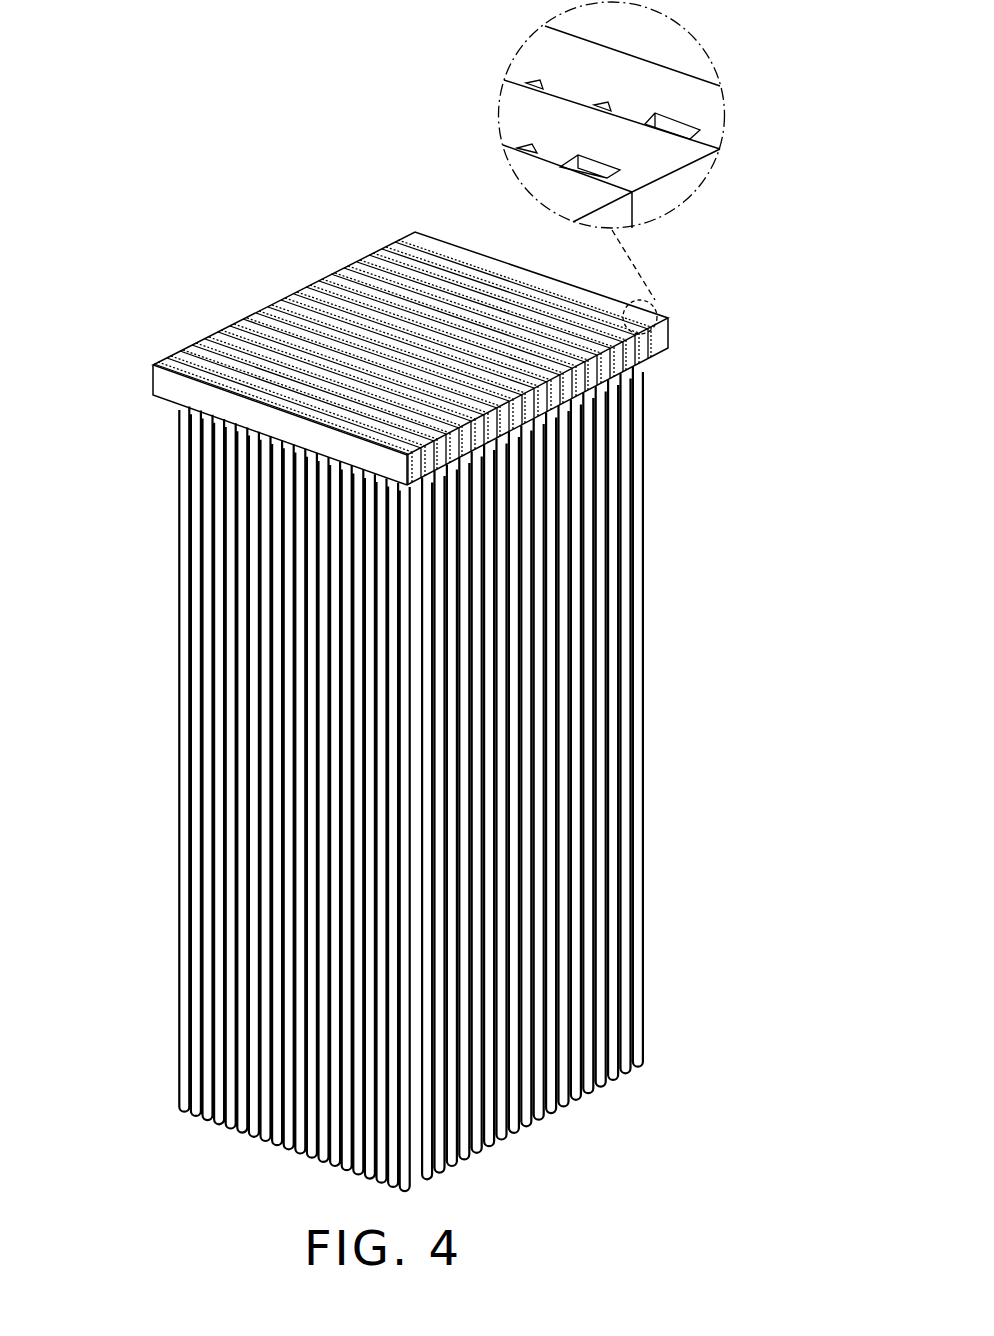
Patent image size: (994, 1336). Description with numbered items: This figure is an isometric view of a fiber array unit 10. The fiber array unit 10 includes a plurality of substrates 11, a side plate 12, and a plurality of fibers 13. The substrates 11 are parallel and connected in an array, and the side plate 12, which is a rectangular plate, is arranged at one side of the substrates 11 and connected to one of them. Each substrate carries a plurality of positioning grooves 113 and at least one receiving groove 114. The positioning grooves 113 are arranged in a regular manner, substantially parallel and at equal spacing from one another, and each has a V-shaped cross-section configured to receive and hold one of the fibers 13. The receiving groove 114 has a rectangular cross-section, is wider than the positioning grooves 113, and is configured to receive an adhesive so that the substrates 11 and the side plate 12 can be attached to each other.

The fiber array unit 10 is at (140, 243).
The substrates 11 is at (428, 235).
The side plate 12 is at (162, 364).
The fibers 13 is at (183, 437).
The positioning grooves 113 is at (527, 83).
The receiving groove 114 is at (683, 130).